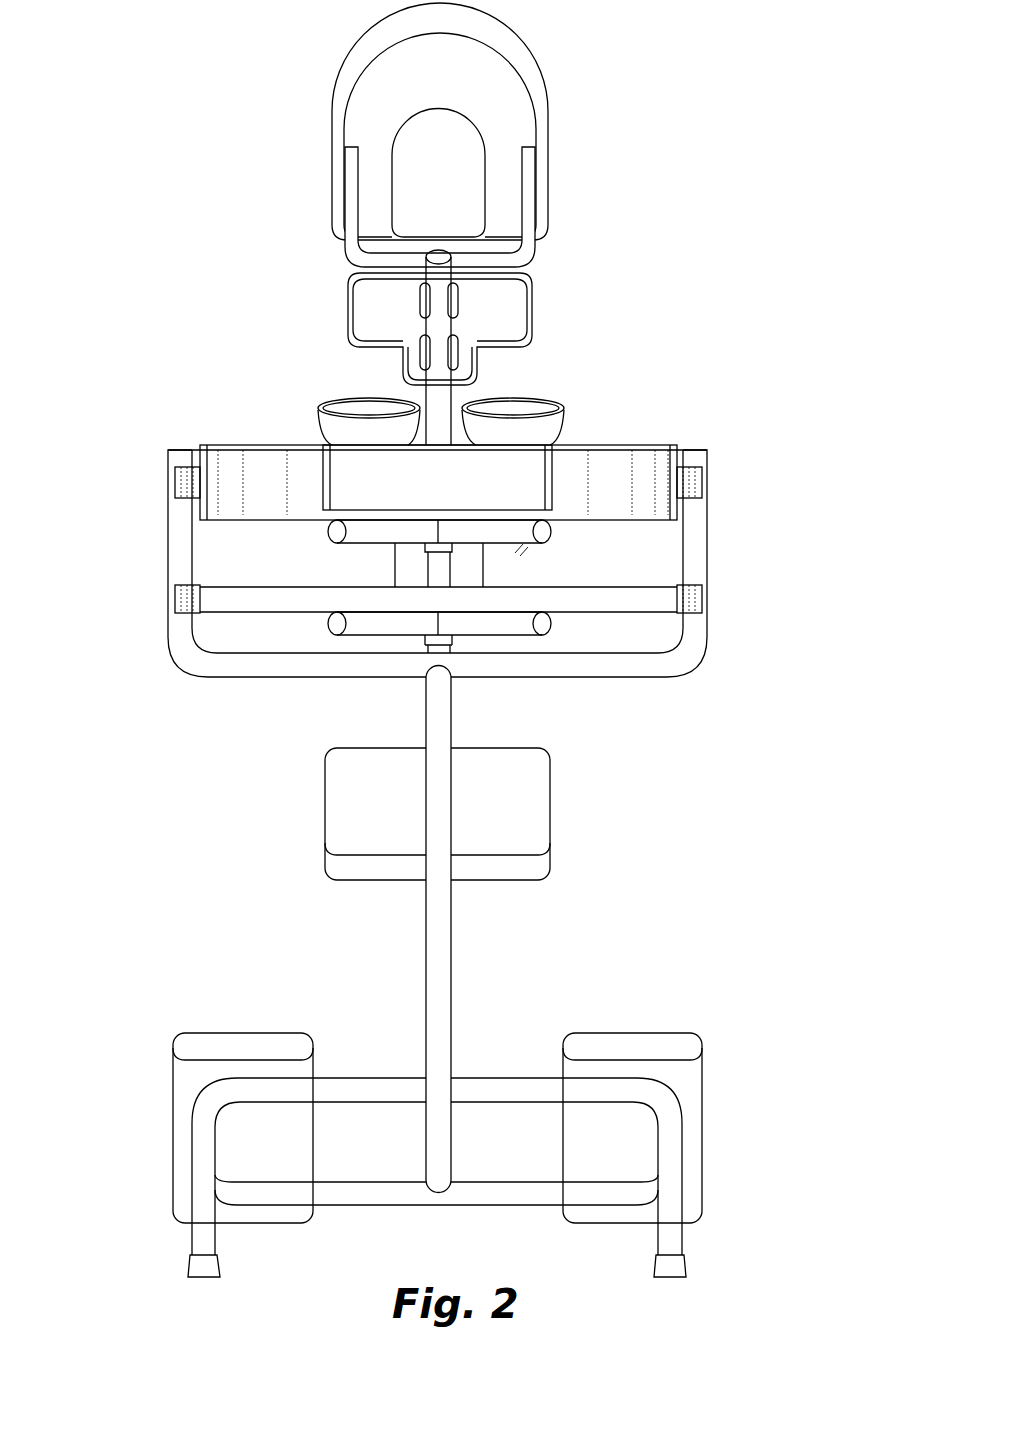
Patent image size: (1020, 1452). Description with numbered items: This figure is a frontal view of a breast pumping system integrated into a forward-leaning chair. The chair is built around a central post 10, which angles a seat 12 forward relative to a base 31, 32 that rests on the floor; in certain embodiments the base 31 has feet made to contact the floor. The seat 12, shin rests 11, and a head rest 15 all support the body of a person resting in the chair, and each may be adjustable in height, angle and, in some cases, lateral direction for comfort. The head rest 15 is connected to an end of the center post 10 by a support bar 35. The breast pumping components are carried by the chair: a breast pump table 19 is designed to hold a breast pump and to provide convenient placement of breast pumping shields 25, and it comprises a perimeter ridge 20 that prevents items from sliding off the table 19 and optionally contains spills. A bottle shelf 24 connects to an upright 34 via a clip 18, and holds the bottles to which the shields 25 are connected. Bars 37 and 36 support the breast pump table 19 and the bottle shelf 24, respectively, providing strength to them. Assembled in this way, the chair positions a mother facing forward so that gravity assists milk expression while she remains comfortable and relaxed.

The central post 10 is at (452, 985).
The shin rests 11 is at (253, 1045).
The seat 12 is at (342, 815).
The head rest 15 is at (334, 120).
The clip 18 is at (458, 352).
The breast pump table 19 is at (232, 412).
The perimeter ridge 20 is at (612, 460).
The bottle shelf 24 is at (645, 613).
The breast pumping shields 25 is at (342, 402).
The base 31 is at (186, 1268).
The base 32 is at (352, 1206).
The upright 34 is at (625, 680).
The support bar 35 is at (345, 213).
The bar 36 is at (332, 629).
The bar 37 is at (333, 538).